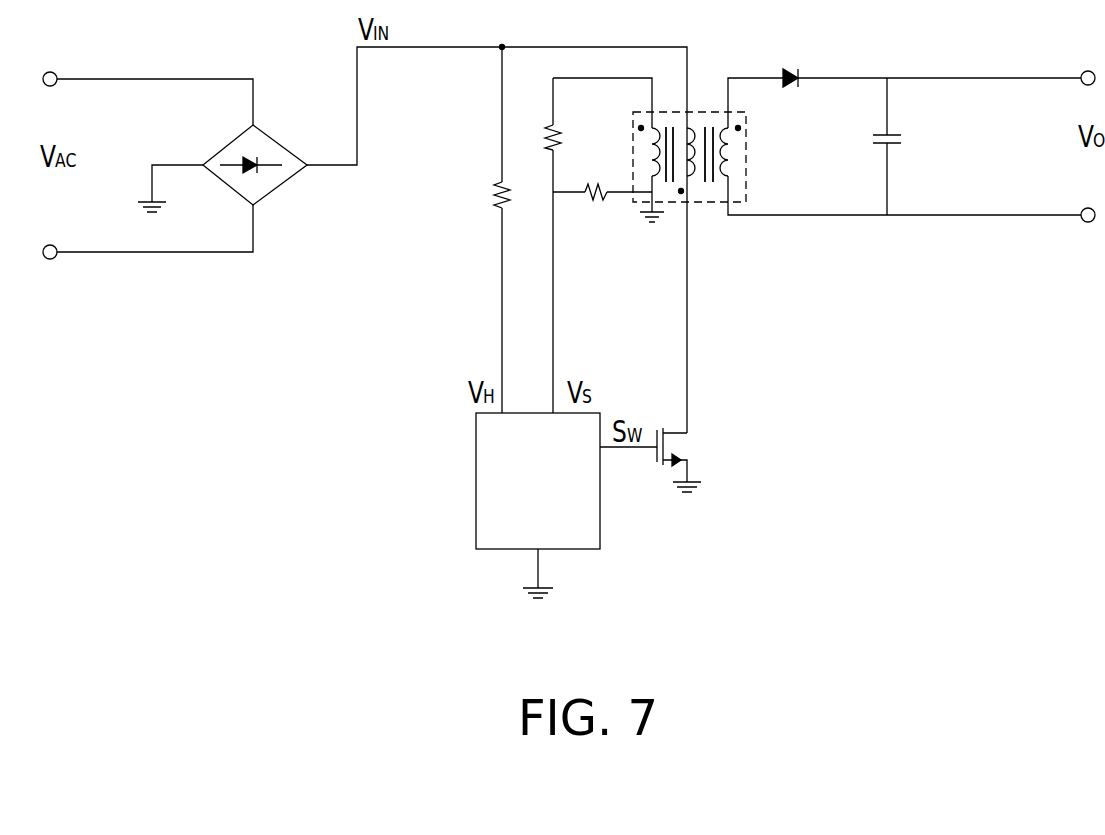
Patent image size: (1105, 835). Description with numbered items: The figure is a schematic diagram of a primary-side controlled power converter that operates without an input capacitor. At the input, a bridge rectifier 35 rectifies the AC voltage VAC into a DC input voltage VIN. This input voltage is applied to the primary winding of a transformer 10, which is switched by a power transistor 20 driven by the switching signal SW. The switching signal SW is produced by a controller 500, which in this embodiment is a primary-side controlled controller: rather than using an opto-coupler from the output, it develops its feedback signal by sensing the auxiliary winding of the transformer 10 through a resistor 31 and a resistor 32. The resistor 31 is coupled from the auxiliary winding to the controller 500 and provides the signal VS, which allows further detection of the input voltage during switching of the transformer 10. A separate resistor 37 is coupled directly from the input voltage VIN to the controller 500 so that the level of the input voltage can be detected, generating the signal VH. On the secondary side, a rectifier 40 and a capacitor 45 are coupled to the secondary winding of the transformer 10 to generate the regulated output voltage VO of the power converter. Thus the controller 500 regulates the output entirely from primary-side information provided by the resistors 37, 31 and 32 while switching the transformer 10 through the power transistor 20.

The bridge rectifier 35 is at (282, 145).
The resistor 37 is at (492, 190).
The resistor 31 is at (558, 125).
The resistor 32 is at (590, 196).
The transformer 10 is at (702, 203).
The power transistor 20 is at (676, 431).
The rectifier 40 is at (793, 70).
The capacitor 45 is at (892, 133).
The controller 500 is at (476, 480).